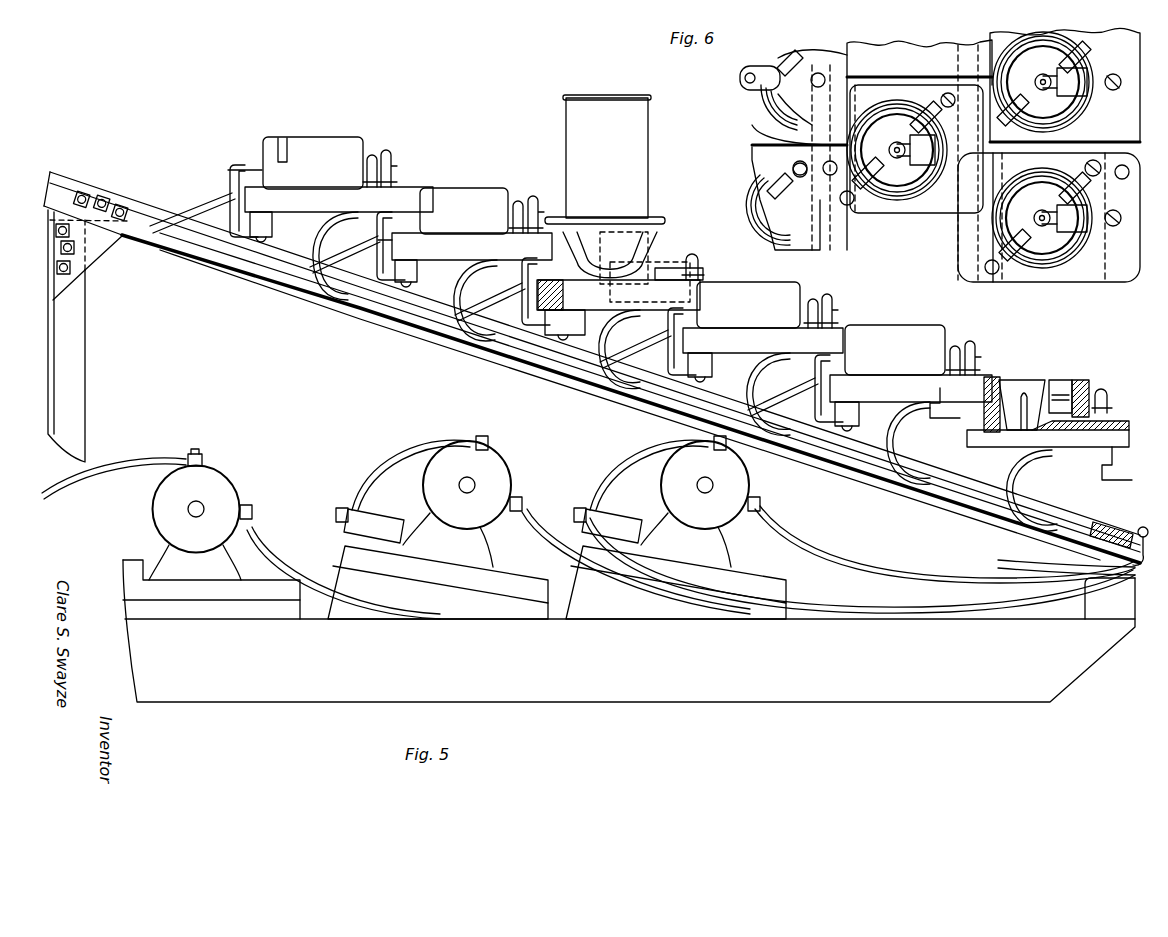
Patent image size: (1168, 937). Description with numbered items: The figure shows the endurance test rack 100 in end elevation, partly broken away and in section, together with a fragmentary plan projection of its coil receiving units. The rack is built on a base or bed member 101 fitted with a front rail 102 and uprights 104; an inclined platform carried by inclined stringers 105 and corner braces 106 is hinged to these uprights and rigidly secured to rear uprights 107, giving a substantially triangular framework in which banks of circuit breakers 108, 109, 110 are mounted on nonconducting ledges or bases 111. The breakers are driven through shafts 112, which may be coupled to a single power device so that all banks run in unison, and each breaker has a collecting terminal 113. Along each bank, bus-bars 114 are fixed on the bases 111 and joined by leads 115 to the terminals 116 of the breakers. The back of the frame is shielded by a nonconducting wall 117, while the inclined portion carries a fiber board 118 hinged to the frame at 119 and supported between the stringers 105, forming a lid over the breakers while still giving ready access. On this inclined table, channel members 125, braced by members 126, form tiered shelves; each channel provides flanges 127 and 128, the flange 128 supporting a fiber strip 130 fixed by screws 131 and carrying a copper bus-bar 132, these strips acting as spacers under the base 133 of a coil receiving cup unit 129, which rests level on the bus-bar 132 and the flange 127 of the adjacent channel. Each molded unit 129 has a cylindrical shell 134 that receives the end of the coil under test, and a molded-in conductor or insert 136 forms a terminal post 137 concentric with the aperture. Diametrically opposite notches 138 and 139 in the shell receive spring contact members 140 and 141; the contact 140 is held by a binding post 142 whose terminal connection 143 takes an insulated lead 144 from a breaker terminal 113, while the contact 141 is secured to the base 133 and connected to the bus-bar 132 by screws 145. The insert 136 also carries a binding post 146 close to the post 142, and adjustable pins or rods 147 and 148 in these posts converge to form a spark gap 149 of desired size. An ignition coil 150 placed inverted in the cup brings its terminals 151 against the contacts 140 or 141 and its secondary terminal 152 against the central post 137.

In FIG. 5, the endurance test rack 100 is at (34, 302).
In FIG. 5, the base or bed member 101 is at (600, 702).
In FIG. 5, the front rail 102 is at (1096, 614).
In FIG. 5, the uprights 104 is at (1091, 557).
In FIG. 5, the inclined stringers 105 is at (258, 263).
In FIG. 5, the corner braces 106 is at (99, 250).
In FIG. 5, the rear uprights 107 is at (80, 308).
In FIG. 5, the circuit breakers 108 is at (221, 484).
In FIG. 5, the circuit breakers 109 is at (497, 466).
In FIG. 5, the circuit breakers 110 is at (742, 480).
In FIG. 5, the ledges or bases 111 is at (273, 586).
In FIG. 5, the shafts 112 is at (188, 509).
In FIG. 5, the collecting terminal 113 is at (251, 506).
In FIG. 5, the bus-bars 114 is at (383, 518).
In FIG. 5, the leads 115 is at (148, 460).
In FIG. 5, the terminals 116 is at (197, 452).
In FIG. 5, the nonconducting wall 117 is at (46, 366).
In FIG. 5, the nonconducting fiber board 118 is at (320, 302).
In FIG. 5, the hinge 119 is at (1143, 527).
In FIG. 5, the channel members 125 is at (233, 168).
In FIG. 5, the bracing members 126 is at (200, 204).
In FIG. 5, the flange 127 is at (248, 164).
In FIG. 5, the flange 128 is at (233, 249).
In FIG. 5, the coil receiving cup unit 129 is at (345, 146).
In FIG. 5, the fiber strip 130 is at (266, 224).
In FIG. 5, the screws 131 is at (565, 326).
In FIG. 5, the copper bus-bar 132 is at (254, 222).
In FIG. 5, the base 133 is at (401, 193).
In FIG. 5, the cylindrical shell 134 is at (492, 193).
In FIG. 5, the metallic conductor or insert 136 is at (681, 275).
In FIG. 5, the terminal post 137 is at (628, 265).
In FIG. 6, the terminal post 137 is at (1040, 217).
In FIG. 5, the notch 138 is at (1066, 380).
In FIG. 6, the notch 138 is at (1062, 176).
In FIG. 6, the notch 139 is at (1013, 258).
In FIG. 6, the spring contact member 140 is at (1092, 166).
In FIG. 5, the contact member 141 is at (555, 266).
In FIG. 6, the contact member 141 is at (1005, 242).
In FIG. 5, the binding post 142 is at (1090, 390).
In FIG. 6, the binding post 142 is at (1100, 174).
In FIG. 5, the terminal connection 143 is at (944, 405).
In FIG. 5, the insulated lead 144 is at (910, 418).
In FIG. 5, the screws 145 is at (567, 292).
In FIG. 5, the binding post 146 is at (686, 263).
In FIG. 6, the pin or rod 147 is at (1120, 180).
In FIG. 6, the pin or rod 148 is at (1111, 227).
In FIG. 6, the spark gap 149 is at (1092, 44).
In FIG. 5, the electrical coil 150 is at (610, 108).
In FIG. 5, the terminals 151 is at (588, 282).
In FIG. 5, the secondary terminal 152 is at (605, 255).